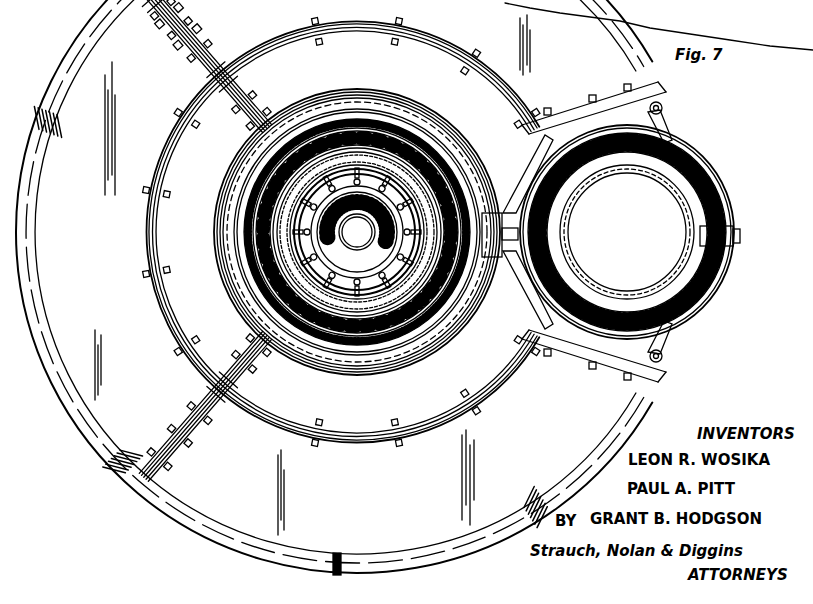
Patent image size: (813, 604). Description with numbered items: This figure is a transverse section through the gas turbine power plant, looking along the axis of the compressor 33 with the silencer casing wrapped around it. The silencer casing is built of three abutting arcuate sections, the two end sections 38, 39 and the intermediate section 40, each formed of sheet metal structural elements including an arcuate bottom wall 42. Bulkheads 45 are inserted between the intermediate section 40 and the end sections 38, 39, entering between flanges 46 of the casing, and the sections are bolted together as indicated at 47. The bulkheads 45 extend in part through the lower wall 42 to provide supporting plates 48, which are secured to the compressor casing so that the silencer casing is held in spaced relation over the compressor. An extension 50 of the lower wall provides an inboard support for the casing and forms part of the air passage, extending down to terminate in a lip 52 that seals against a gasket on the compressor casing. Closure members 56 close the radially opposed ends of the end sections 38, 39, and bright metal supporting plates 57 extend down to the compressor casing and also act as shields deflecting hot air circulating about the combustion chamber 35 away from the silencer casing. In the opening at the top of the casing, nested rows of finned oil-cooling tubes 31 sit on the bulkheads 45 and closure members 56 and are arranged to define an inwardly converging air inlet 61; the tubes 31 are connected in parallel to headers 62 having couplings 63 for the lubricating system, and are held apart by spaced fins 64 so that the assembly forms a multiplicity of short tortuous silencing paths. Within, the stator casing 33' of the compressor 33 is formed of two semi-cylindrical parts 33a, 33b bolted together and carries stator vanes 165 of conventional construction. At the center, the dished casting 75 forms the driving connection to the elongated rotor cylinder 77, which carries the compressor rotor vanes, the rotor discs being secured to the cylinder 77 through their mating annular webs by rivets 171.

The finned oil-cooling tubes 31 is at (30, 113).
The compressor 33 is at (357, 220).
The stator casing 33' is at (357, 206).
The semi-cylindrical part 33a is at (298, 232).
The semi-cylindrical part 33b is at (357, 232).
The combustion chamber 35 is at (640, 232).
The end section 38 is at (563, 59).
The end section 39 is at (408, 495).
The intermediate section 40 is at (95, 225).
The bottom wall 42 is at (341, 232).
The bulkheads 45 is at (188, 12).
The flanges 46 is at (190, 30).
The bolts 47 is at (166, 54).
The supporting plates 48 is at (207, 243).
The extension 50 is at (357, 207).
The lip 52 is at (357, 225).
The closure members 56 is at (594, 239).
The supporting plates 57 is at (510, 241).
The air inlet 61 is at (334, 287).
The headers 62 is at (680, 240).
The couplings 63 is at (679, 233).
The fins 64 is at (311, 485).
The dished casting 75 is at (357, 232).
The rotor cylinder 77 is at (340, 287).
The stator vanes 165 is at (257, 197).
The rivets 171 is at (306, 232).